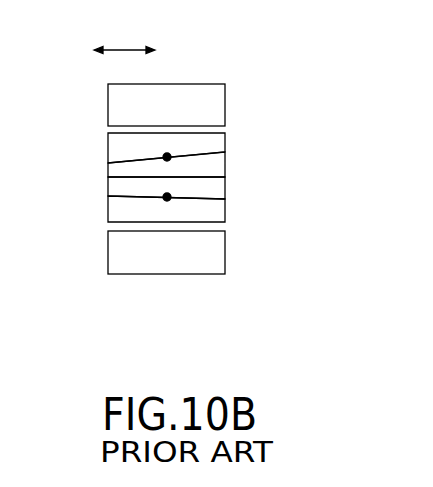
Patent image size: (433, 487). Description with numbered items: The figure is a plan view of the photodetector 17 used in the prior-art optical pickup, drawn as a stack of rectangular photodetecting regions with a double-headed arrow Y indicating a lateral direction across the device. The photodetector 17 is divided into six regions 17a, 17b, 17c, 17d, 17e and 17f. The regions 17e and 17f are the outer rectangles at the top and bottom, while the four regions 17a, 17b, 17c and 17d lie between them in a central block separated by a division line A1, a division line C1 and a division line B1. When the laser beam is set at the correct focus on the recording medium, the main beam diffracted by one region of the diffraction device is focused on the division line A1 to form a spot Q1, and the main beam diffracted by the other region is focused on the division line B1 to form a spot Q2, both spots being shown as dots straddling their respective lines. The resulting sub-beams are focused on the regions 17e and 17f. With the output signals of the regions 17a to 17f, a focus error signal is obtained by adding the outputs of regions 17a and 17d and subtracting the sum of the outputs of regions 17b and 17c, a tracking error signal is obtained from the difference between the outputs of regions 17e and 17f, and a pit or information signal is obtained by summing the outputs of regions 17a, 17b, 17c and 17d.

The photodetector 17 is at (206, 213).
The photodetecting region 17a is at (227, 140).
The photodetecting region 17b is at (227, 160).
The photodetecting region 17c is at (227, 190).
The photodetecting region 17d is at (227, 205).
The photodetecting region 17e is at (227, 93).
The photodetecting region 17f is at (227, 250).
The division line A1 is at (122, 163).
The division line B1 is at (122, 197).
The center surface C1 is at (116, 170).
The spot Q1 is at (167, 157).
The spot Q2 is at (167, 197).
The Y direction Y is at (124, 33).